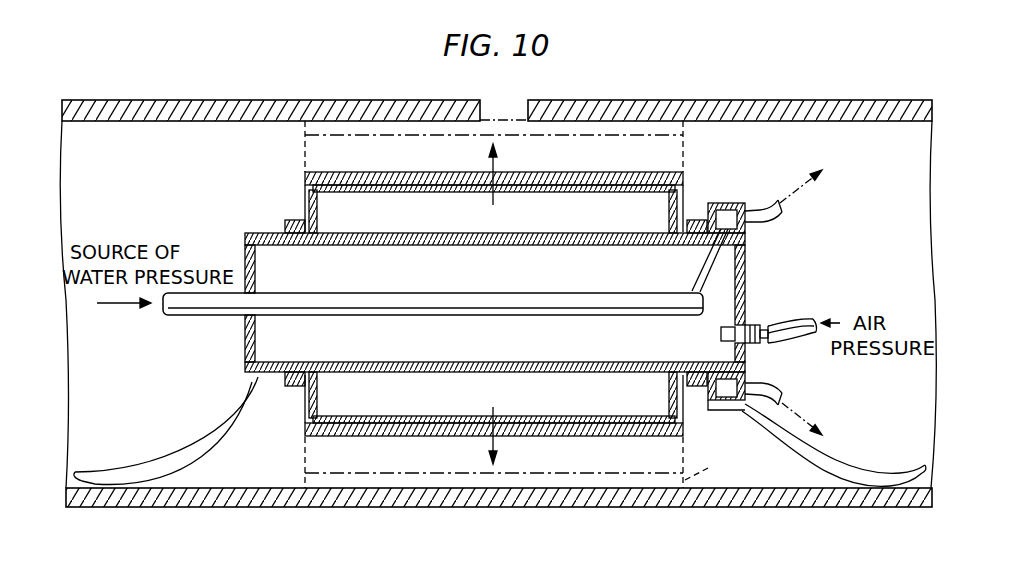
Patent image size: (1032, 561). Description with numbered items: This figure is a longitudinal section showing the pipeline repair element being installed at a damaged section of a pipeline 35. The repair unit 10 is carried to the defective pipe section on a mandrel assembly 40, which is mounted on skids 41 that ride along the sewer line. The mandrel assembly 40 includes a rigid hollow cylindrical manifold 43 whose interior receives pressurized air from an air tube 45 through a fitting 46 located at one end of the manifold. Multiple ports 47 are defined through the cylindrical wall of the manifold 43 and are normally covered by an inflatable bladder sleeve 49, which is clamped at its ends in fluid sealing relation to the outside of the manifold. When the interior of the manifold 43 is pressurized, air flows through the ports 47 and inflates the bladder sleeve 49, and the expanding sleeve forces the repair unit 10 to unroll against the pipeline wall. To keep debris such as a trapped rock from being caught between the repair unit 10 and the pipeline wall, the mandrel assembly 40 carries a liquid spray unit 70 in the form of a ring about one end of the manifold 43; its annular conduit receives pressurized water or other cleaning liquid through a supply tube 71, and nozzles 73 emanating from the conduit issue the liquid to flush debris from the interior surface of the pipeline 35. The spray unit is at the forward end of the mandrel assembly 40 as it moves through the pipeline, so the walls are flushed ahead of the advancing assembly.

The repair unit 10 is at (683, 432).
The pipeline 35 is at (176, 100).
The mandrel assembly 40 is at (222, 350).
The skids 41 is at (180, 462).
The manifold 43 is at (338, 362).
The air tube 45 is at (805, 318).
The fitting 46 is at (757, 325).
The ports 47 is at (373, 246).
The bladder sleeve 49 is at (494, 404).
The liquid spray unit 70 is at (722, 205).
The supply tube 71 is at (178, 316).
The discharge nozzle 73 is at (768, 216).